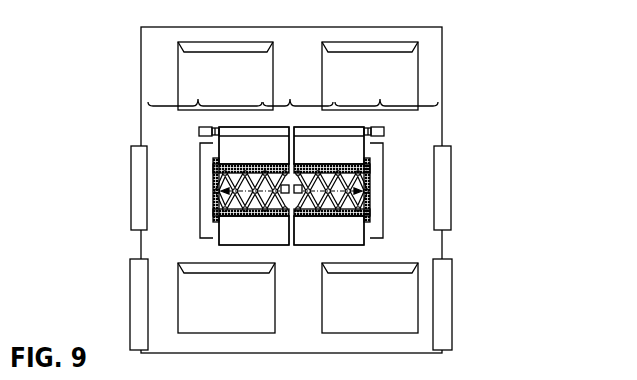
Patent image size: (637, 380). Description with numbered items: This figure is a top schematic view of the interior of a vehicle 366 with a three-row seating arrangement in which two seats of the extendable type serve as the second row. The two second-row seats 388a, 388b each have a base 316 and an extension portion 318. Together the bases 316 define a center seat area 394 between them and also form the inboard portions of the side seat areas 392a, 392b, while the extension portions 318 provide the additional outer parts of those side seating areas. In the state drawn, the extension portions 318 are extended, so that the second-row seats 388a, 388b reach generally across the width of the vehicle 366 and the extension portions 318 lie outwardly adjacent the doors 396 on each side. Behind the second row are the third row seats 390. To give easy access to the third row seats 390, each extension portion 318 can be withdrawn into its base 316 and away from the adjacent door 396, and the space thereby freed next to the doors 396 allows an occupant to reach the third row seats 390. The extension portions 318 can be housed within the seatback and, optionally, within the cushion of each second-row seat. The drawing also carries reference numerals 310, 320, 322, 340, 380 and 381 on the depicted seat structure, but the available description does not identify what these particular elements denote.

The scissor actuator assembly 310 is at (178, 147).
The base 316 is at (261, 158).
The extension portion 318 is at (199, 131).
The lower rail 320 is at (217, 214).
The side bracket 322 is at (213, 178).
The upper rail 340 is at (213, 162).
The vehicle 366 is at (438, 360).
The battery module 380 is at (377, 310).
The battery module 381 is at (232, 310).
The second-row seat 388a is at (207, 248).
The second-row seat 388b is at (376, 248).
The third row seat 390 is at (232, 73).
The side seat area 392a is at (205, 95).
The side seat area 392b is at (386, 95).
The center seat area 394 is at (298, 95).
The door 396 is at (137, 185).